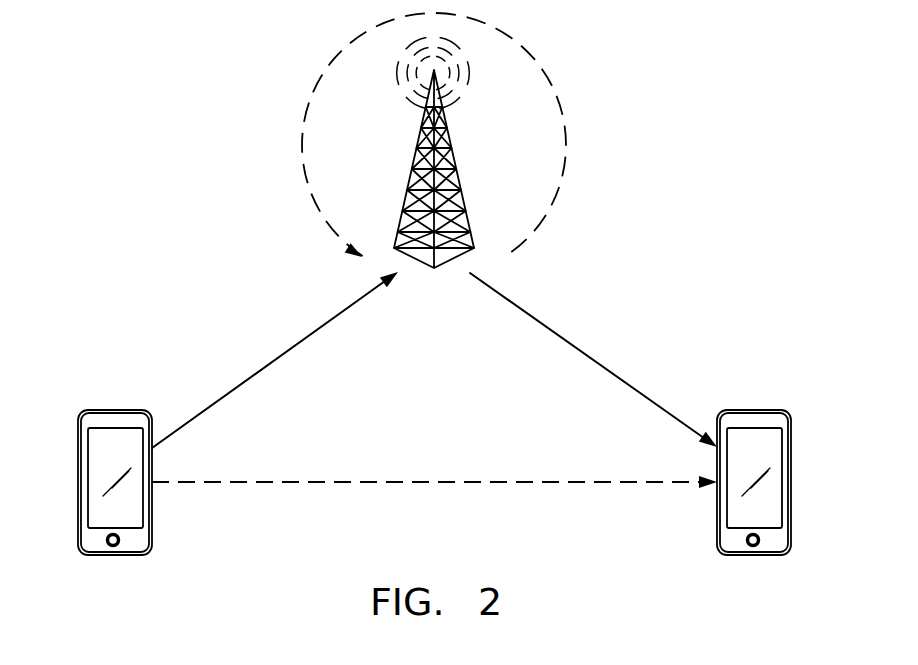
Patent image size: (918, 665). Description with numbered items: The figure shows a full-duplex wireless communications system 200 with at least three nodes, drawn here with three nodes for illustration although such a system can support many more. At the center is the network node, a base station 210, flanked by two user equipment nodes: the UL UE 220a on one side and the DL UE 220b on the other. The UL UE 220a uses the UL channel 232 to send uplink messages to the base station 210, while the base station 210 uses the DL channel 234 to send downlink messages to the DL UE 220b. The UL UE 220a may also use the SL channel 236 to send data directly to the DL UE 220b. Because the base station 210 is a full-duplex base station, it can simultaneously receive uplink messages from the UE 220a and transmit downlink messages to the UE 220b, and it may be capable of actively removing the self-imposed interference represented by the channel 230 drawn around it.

The full-duplex wireless communications system 200 is at (688, 104).
The base station 210 is at (408, 168).
The UL UE 220a is at (115, 557).
The DL UE 220b is at (755, 557).
The channel 230 is at (302, 145).
The UL channel 232 is at (270, 363).
The DL channel 234 is at (625, 350).
The SL channel 236 is at (412, 483).